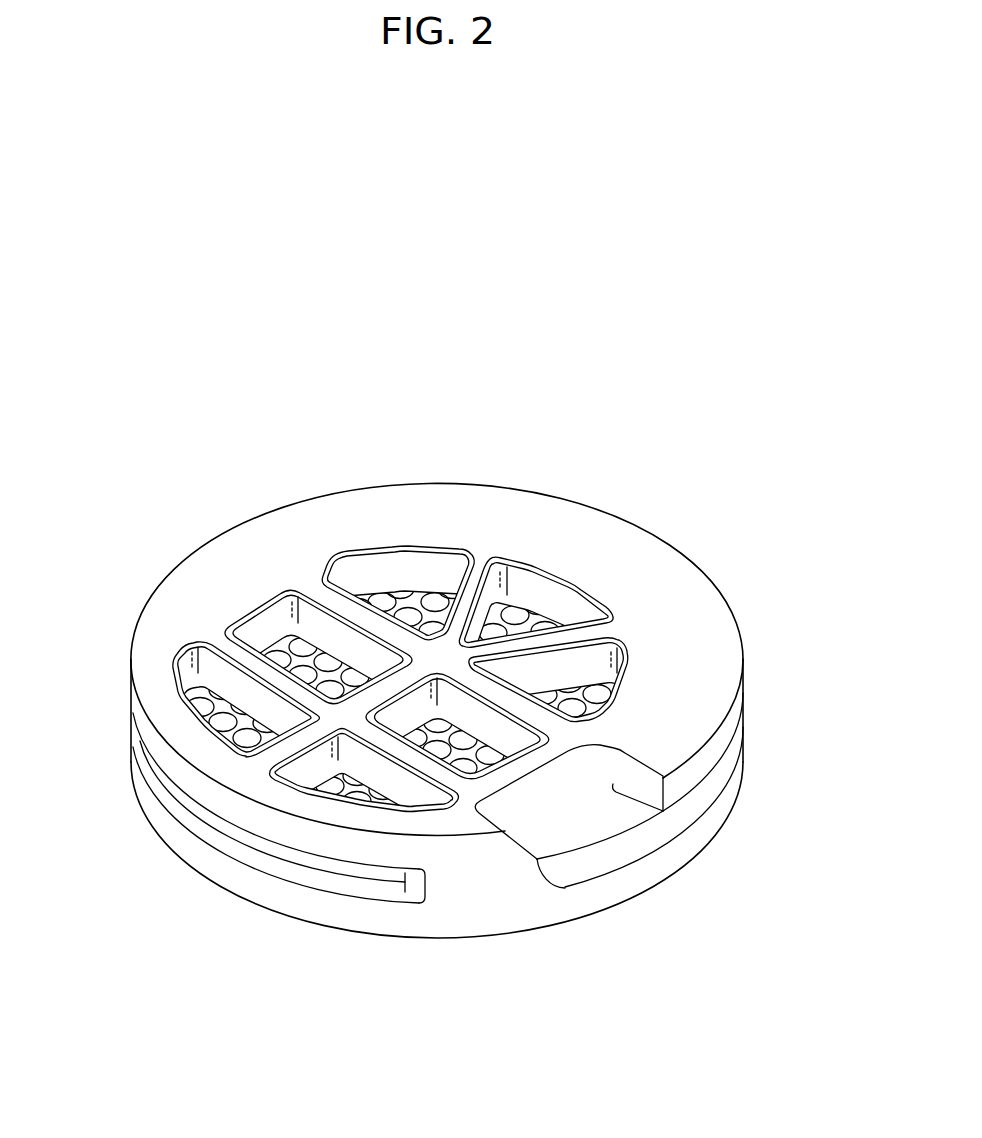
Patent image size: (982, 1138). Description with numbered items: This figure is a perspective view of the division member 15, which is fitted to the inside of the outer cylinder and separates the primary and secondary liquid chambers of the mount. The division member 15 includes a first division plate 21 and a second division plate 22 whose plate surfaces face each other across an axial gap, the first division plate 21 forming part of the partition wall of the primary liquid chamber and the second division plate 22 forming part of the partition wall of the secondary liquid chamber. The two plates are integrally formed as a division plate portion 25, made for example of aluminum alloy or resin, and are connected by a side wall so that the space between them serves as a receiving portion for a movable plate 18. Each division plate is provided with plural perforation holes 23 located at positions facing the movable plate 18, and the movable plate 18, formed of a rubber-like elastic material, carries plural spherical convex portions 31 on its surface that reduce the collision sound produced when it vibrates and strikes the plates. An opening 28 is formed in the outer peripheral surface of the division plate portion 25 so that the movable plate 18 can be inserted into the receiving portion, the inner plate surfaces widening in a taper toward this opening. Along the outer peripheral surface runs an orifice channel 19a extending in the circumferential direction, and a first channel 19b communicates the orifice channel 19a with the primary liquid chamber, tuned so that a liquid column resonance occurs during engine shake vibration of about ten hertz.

The division member 15 is at (649, 505).
The movable plate 18 is at (208, 825).
The orifice channel 19a is at (640, 837).
The first channel 19b is at (570, 852).
The first division plate 21 is at (682, 590).
The second division plate 22 is at (503, 937).
The perforation holes 23 is at (383, 578).
The division plate portion 25 is at (742, 615).
The opening 28 is at (412, 882).
The spherical convex portions 31 is at (328, 655).